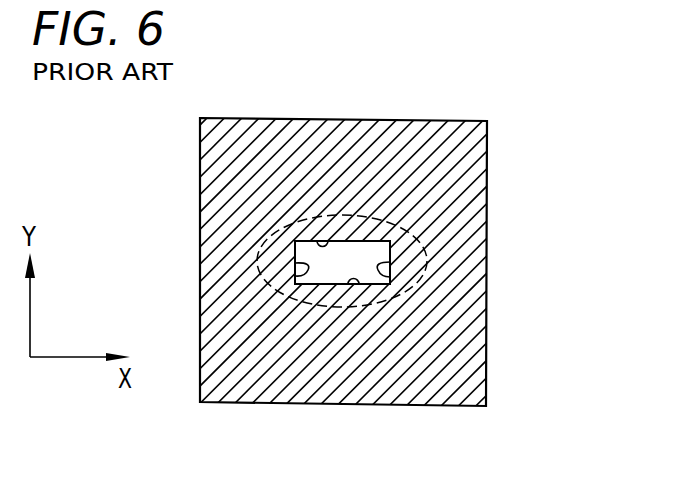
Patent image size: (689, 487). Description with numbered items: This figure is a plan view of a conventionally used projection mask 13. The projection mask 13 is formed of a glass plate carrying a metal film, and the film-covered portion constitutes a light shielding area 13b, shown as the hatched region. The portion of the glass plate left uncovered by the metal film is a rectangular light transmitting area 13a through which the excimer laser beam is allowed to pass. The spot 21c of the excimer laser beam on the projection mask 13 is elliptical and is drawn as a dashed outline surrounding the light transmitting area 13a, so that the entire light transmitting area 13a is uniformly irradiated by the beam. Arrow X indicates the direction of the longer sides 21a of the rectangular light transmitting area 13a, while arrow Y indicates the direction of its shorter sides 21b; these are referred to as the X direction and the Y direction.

The projection mask 13 is at (439, 259).
The light transmitting area 13a is at (373, 253).
The light shielding area 13b is at (470, 155).
The longer sides 21a is at (320, 248).
The shorter sides 21b is at (295, 276).
The spot 21c is at (257, 265).